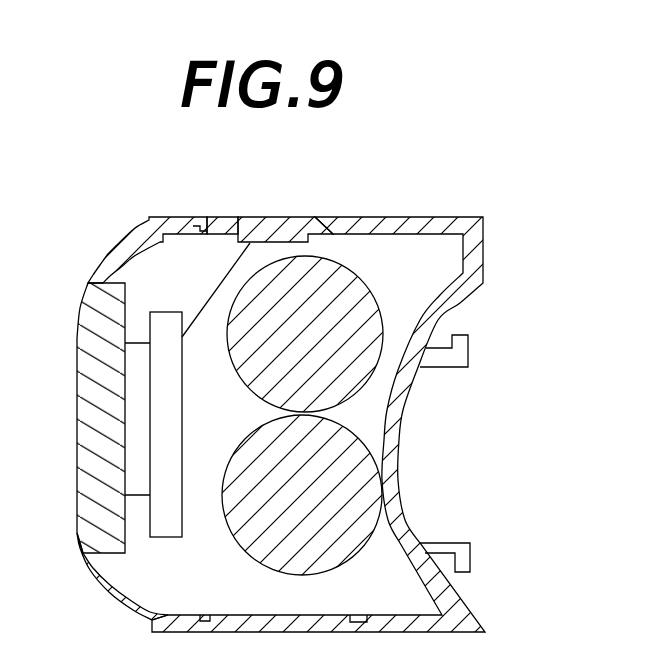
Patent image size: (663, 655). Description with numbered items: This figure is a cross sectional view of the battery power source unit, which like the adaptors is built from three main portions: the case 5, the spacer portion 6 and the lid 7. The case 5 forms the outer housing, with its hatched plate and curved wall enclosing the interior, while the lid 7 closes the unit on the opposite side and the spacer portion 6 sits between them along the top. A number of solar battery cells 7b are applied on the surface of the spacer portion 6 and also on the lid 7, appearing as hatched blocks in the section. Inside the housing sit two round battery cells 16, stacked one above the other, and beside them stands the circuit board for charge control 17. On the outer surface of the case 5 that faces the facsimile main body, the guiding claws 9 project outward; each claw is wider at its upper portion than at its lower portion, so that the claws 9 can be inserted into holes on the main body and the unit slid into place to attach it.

The case 5 is at (440, 222).
The spacer portion 6 is at (223, 218).
The lid 7 is at (167, 218).
The solar battery cells 7b is at (280, 223).
The guiding claws 9 is at (460, 545).
The battery cell 16 is at (327, 268).
The circuit board for charge control 17 is at (173, 540).